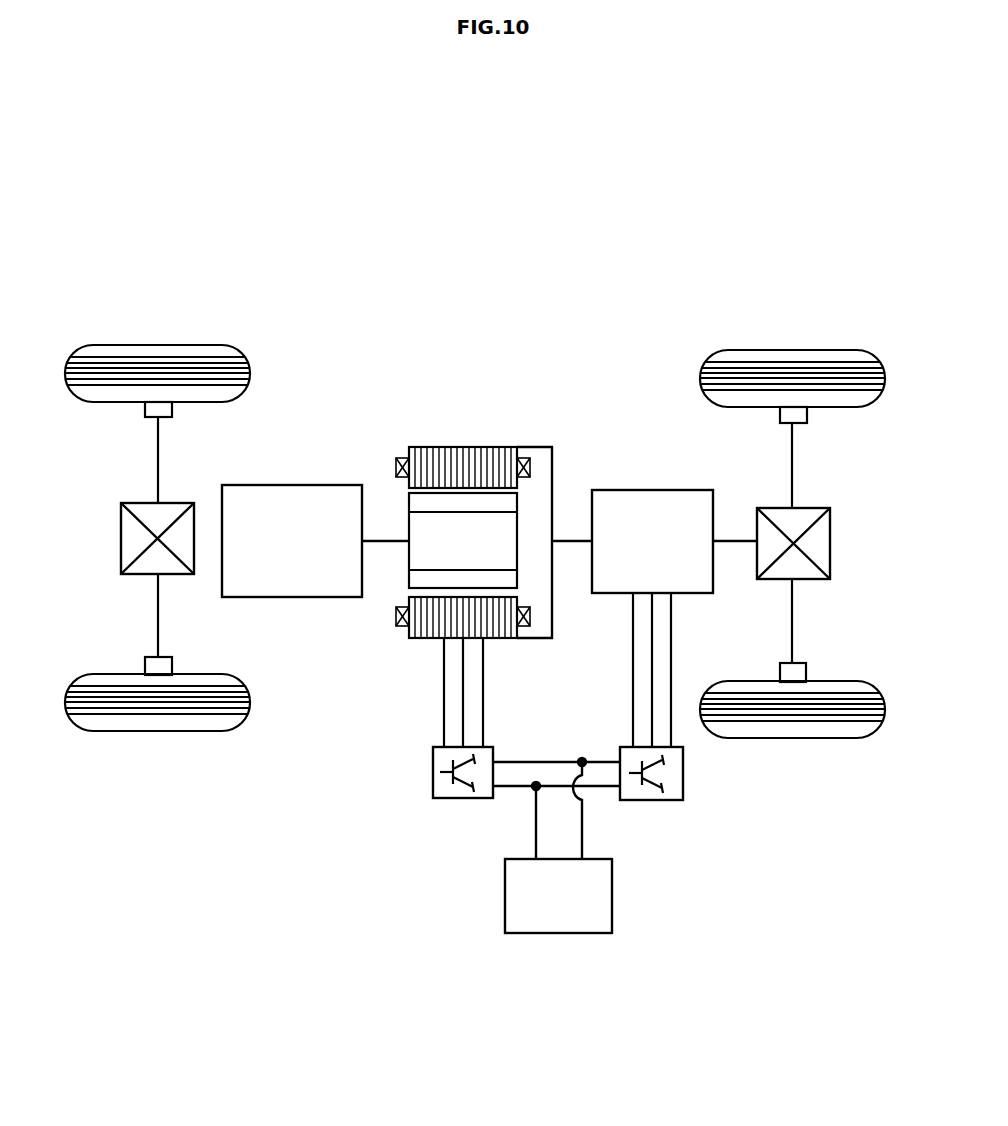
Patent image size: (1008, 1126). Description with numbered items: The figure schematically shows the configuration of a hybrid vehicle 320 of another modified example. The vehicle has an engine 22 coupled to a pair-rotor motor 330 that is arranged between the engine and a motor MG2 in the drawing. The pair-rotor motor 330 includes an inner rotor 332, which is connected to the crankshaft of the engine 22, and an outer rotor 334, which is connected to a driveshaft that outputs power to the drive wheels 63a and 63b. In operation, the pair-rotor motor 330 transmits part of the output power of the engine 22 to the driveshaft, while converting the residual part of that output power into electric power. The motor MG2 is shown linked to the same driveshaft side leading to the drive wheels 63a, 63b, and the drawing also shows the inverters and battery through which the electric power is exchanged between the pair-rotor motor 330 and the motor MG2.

The hybrid vehicle 320 is at (393, 306).
The pair-rotor motor 330 is at (475, 386).
The inner rotor 332 is at (409, 522).
The outer rotor 334 is at (502, 447).
The engine 22 is at (291, 485).
The motor MG2 is at (656, 490).
The drive wheel 63a is at (794, 350).
The drive wheel 63b is at (793, 737).